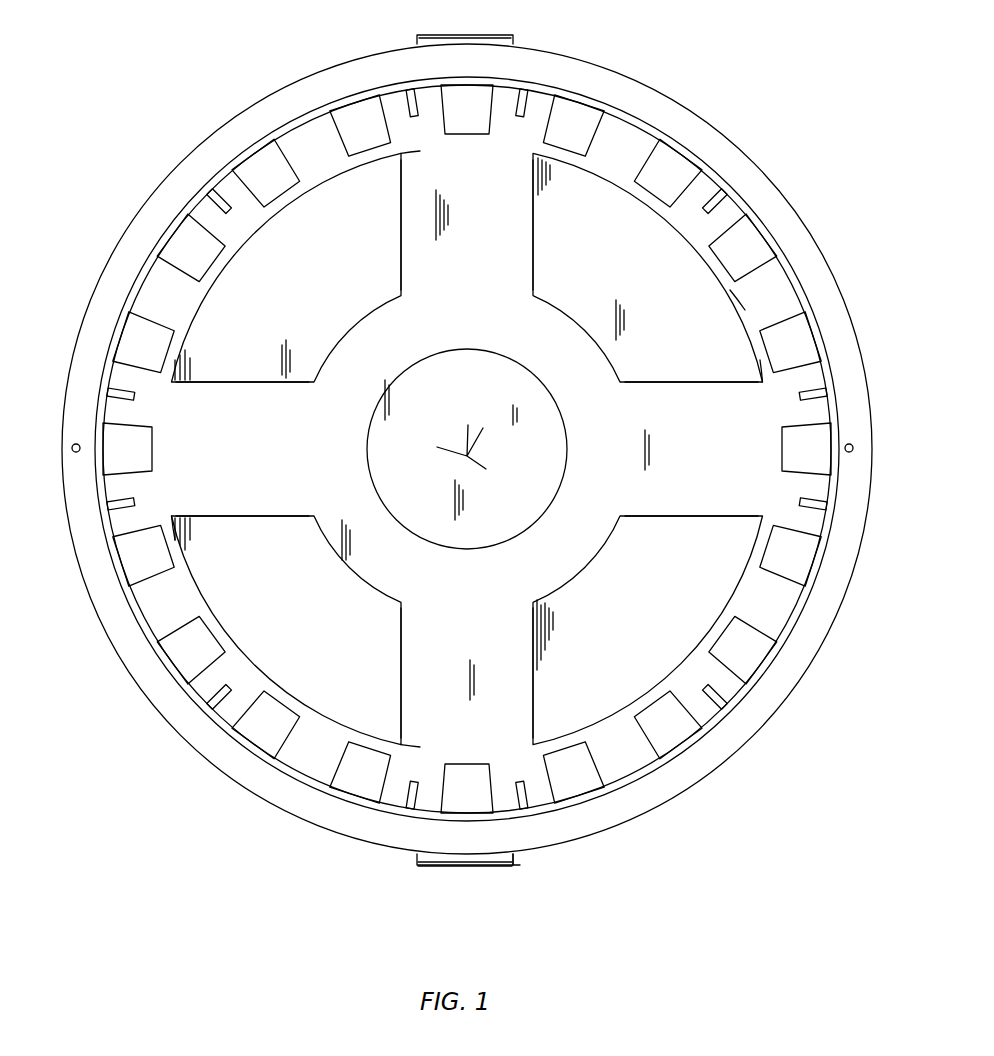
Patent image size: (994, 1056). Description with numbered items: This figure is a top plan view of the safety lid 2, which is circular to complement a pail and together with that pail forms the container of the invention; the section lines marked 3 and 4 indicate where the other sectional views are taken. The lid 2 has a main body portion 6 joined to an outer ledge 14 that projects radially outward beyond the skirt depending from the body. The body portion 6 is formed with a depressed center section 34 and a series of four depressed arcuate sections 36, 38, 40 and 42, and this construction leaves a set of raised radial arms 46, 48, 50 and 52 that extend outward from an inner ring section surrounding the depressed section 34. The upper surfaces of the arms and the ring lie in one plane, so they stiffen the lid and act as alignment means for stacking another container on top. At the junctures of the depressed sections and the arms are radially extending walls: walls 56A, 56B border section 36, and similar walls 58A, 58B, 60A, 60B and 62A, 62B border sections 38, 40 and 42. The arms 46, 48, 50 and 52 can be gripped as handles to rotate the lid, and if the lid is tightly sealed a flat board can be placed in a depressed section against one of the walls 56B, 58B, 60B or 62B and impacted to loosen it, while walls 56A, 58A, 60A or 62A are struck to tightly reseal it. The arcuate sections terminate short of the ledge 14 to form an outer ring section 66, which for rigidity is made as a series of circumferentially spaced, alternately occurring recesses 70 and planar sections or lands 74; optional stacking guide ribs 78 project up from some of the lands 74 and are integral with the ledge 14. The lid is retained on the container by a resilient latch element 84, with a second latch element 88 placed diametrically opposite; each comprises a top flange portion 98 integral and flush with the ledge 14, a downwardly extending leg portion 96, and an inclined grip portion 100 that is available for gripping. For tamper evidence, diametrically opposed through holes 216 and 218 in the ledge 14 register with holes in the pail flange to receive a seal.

The lid 2 is at (853, 264).
The main body portion 6 is at (467, 449).
The outer ledge 14 is at (232, 127).
The depressed center section 34 is at (452, 402).
The depressed arcuate section 36 is at (629, 622).
The depressed arcuate section 38 is at (606, 280).
The depressed arcuate section 40 is at (269, 307).
The depressed arcuate section 42 is at (289, 617).
The raised radial arm 46 is at (415, 692).
The raised radial arm 48 is at (678, 406).
The raised radial arm 50 is at (403, 202).
The raised radial arm 52 is at (249, 498).
The radially-extending wall 56A is at (536, 682).
The radially-extending wall 56B is at (684, 518).
The radially-extending wall 58A is at (650, 382).
The radially-extending wall 58B is at (535, 217).
The radially-extending wall 60A is at (402, 236).
The radially-extending wall 60B is at (258, 380).
The radially-extending wall 62A is at (284, 515).
The radially-extending wall 62B is at (405, 674).
The outer ring section 66 is at (732, 302).
The recess 70 is at (567, 118).
The planar section 74 is at (500, 108).
The rib 78 is at (410, 102).
The latch element 84 is at (497, 874).
The second latch element 88 is at (490, 34).
The leg portion 96 is at (432, 864).
The flange portion 98 is at (443, 858).
The grip portion 100 is at (510, 865).
The through hole 216 is at (80, 447).
The through hole 218 is at (845, 446).
The section line 3 is at (30, 408).
The section line 4 is at (705, 76).